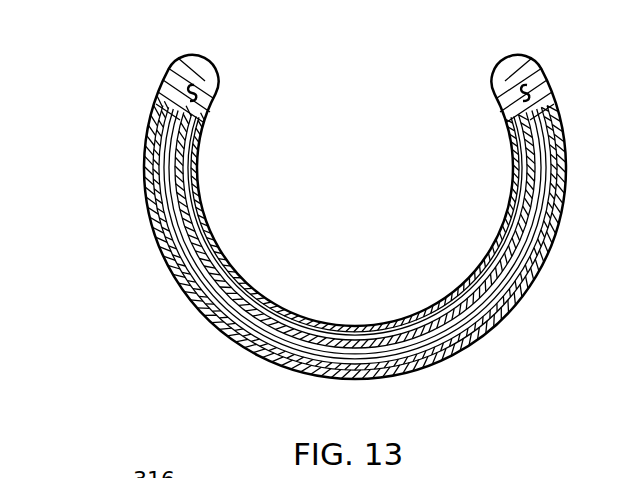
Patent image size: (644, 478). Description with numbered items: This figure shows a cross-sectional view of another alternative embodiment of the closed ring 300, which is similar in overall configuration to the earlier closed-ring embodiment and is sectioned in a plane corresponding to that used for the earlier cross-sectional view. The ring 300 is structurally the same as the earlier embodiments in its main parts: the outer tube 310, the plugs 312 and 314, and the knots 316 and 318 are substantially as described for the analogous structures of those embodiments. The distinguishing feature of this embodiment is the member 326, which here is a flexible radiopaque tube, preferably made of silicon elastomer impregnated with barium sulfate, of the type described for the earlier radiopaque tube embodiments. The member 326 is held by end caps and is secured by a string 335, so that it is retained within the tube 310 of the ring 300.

The ring 300 is at (145, 123).
The tube 310 is at (146, 178).
The plug 312 is at (212, 80).
The plug 314 is at (505, 83).
The knot 316 is at (175, 63).
The knot 318 is at (530, 83).
The member 326 is at (165, 238).
The string 335 is at (183, 279).